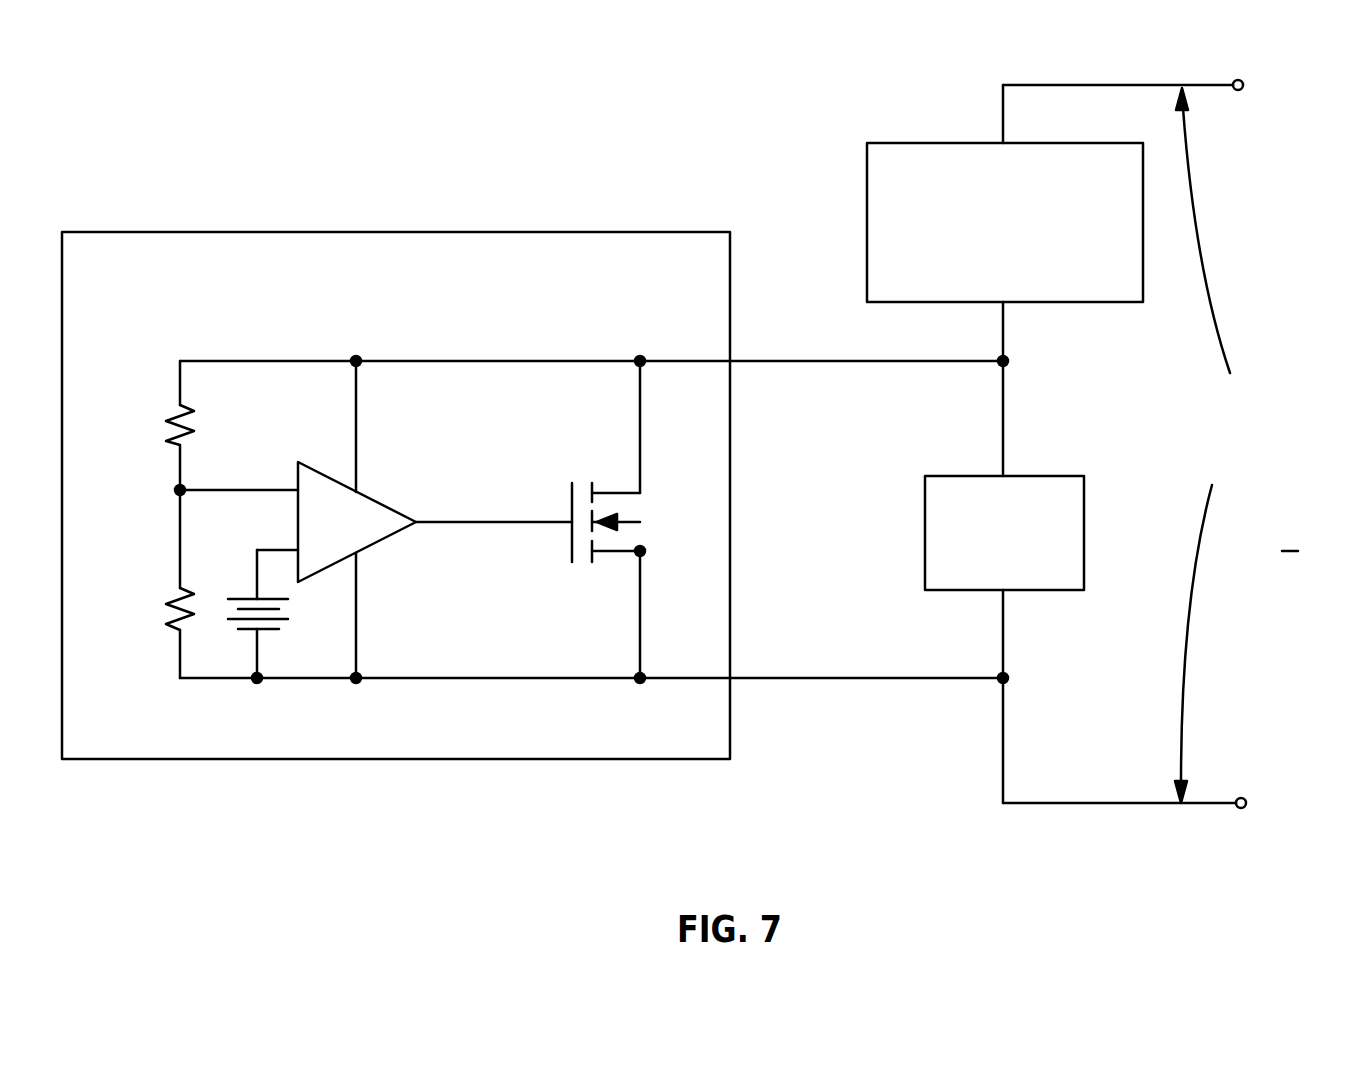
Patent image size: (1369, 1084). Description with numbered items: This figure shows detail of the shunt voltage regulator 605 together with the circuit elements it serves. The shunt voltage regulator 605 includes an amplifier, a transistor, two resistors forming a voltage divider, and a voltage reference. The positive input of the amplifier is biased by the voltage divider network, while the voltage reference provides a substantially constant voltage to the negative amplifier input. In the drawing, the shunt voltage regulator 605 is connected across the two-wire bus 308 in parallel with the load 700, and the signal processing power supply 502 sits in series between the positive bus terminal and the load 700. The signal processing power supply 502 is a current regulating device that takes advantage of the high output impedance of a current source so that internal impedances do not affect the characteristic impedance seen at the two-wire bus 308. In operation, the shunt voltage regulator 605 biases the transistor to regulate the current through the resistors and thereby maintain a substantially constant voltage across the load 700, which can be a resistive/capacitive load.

The shunt voltage regulator 605 is at (375, 305).
The signal processing power supply 502 is at (985, 261).
The load 700 is at (985, 559).
The two-wire bus 308 is at (1213, 462).